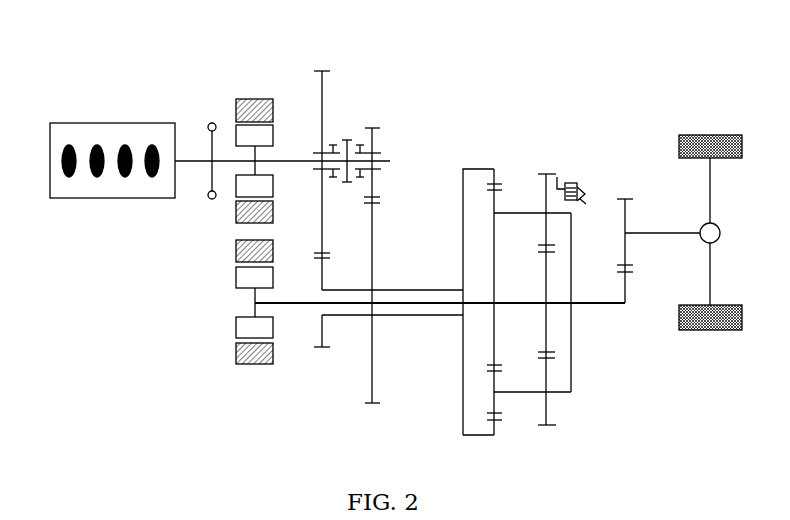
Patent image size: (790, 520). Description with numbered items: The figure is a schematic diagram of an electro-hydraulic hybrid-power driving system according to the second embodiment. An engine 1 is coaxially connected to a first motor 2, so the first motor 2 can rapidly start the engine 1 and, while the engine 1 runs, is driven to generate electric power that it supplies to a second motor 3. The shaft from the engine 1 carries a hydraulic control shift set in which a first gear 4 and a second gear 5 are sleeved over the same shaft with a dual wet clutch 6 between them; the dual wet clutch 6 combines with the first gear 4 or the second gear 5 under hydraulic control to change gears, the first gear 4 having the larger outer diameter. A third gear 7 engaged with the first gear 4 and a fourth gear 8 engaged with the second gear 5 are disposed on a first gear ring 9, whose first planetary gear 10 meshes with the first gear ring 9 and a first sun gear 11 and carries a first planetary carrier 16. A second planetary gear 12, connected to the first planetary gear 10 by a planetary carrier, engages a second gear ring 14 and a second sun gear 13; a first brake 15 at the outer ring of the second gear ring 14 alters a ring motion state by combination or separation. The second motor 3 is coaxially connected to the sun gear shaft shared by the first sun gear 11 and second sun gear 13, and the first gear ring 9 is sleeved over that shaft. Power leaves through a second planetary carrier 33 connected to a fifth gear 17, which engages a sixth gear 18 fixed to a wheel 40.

The engine 1 is at (50, 198).
The first motor 2 is at (236, 110).
The second motor 3 is at (237, 326).
The first gear 4 is at (322, 117).
The second gear 5 is at (377, 140).
The dual wet clutch 6 is at (350, 138).
The third gear 7 is at (323, 278).
The fourth gear 8 is at (374, 270).
The first gear ring 9 is at (475, 169).
The first planetary gear 10 is at (496, 201).
The first sun gear 11 is at (496, 288).
The second planetary gear 12 is at (543, 226).
The second sun gear 13 is at (544, 320).
The second gear ring 14 is at (557, 177).
The first brake 15 is at (578, 192).
The first planetary carrier 16 is at (512, 213).
The fifth gear 17 is at (609, 305).
The sixth gear 18 is at (627, 210).
The second planetary carrier 33 is at (573, 242).
The wheel 40 is at (742, 135).